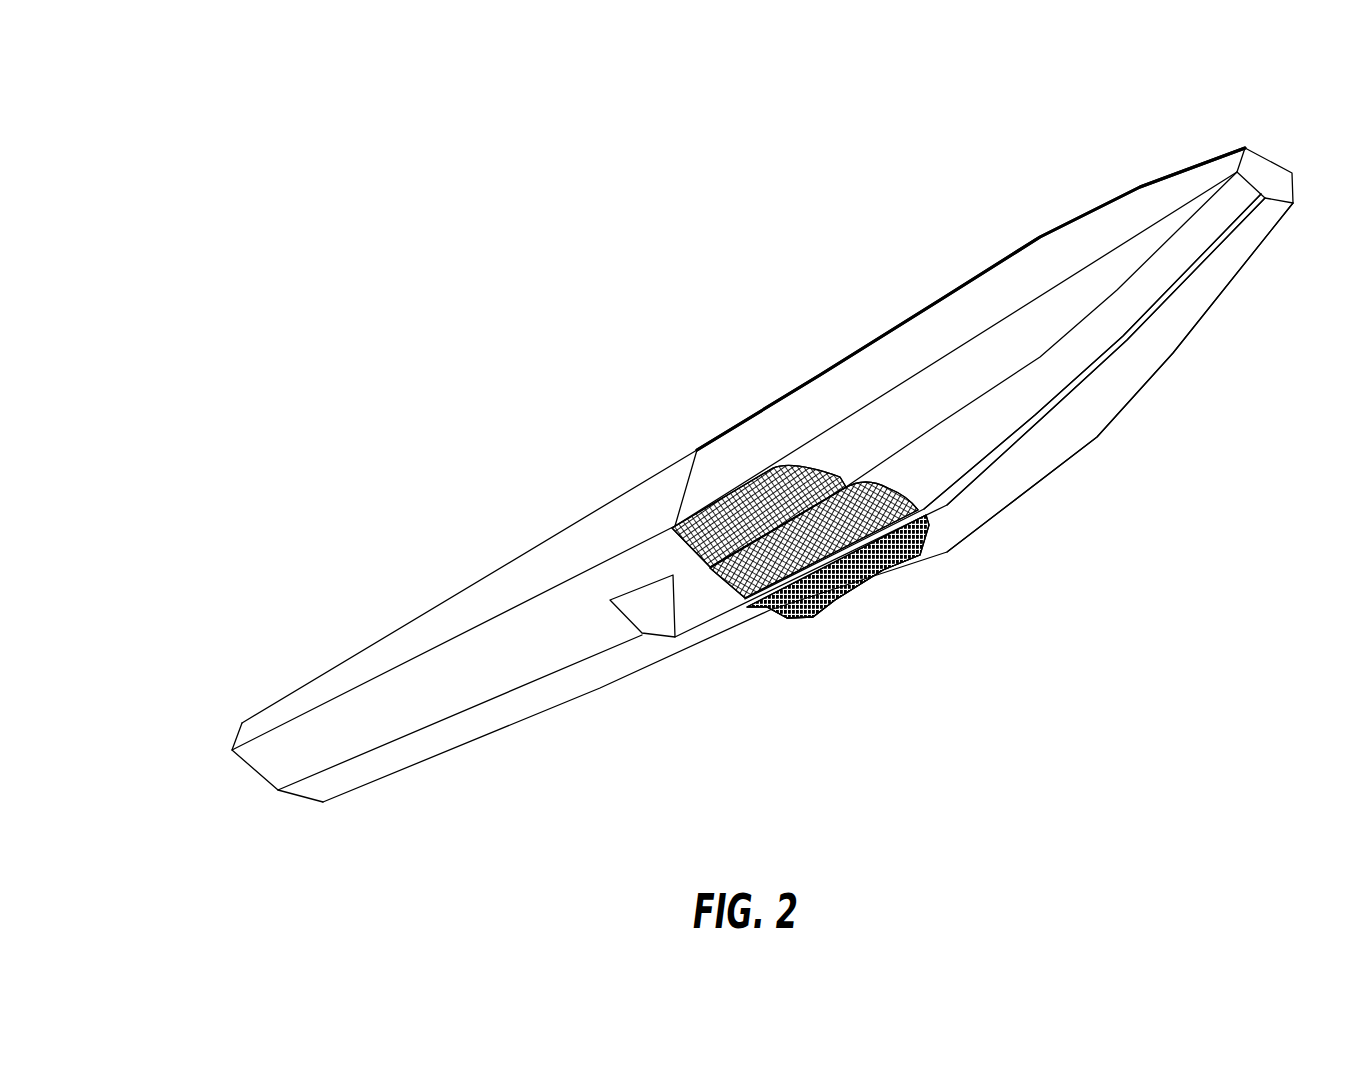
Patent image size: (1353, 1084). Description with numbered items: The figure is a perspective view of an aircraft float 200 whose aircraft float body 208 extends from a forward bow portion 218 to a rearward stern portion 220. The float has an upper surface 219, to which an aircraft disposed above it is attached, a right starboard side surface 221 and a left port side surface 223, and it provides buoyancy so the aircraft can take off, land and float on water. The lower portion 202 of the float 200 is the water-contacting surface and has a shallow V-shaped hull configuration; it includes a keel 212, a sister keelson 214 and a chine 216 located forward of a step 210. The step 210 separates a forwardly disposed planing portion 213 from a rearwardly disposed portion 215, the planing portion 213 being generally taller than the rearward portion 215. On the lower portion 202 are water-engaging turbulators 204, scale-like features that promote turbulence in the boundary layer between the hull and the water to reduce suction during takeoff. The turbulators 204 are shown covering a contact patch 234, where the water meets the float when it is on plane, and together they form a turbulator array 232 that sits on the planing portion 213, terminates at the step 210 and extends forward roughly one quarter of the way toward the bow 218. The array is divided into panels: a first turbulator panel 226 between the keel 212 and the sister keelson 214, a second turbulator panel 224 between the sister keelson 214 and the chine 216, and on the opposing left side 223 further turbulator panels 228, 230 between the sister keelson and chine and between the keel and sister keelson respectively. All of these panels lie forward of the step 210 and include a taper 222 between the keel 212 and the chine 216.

The aircraft float 200 is at (945, 183).
The lower portion 202 is at (1014, 577).
The turbulators 204 is at (830, 640).
The aircraft float body 208 is at (1050, 255).
The step 210 is at (640, 531).
The keel 212 is at (1053, 414).
The planing portion 213 is at (1120, 396).
The sister keelson 214 is at (1117, 290).
The rearward portion 215 is at (496, 720).
The chine 216 is at (870, 400).
The forward (bow) portion 218 is at (1278, 136).
The upper surface 219 is at (458, 608).
The rearward (stern) portion 220 is at (205, 722).
The right (starboard) side surface 221 is at (896, 333).
The taper 222 is at (812, 462).
The left (port) side surface 223 is at (1003, 508).
The second turbulator panel 224 is at (726, 494).
The first turbulator panel 226 is at (733, 600).
The turbulator panel 228 is at (880, 588).
The turbulator panel 230 is at (765, 632).
The turbulator array 232 is at (714, 596).
The contact patch 234 is at (884, 692).